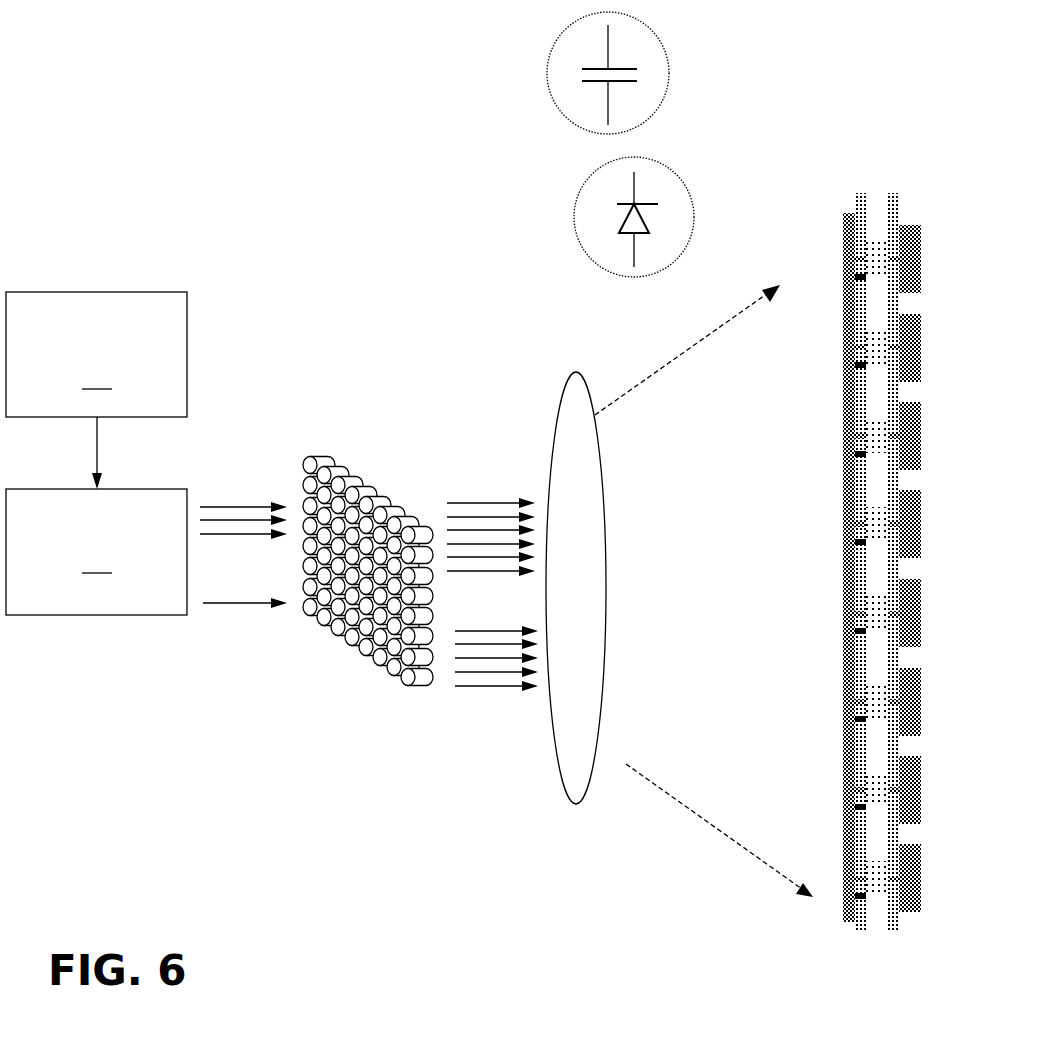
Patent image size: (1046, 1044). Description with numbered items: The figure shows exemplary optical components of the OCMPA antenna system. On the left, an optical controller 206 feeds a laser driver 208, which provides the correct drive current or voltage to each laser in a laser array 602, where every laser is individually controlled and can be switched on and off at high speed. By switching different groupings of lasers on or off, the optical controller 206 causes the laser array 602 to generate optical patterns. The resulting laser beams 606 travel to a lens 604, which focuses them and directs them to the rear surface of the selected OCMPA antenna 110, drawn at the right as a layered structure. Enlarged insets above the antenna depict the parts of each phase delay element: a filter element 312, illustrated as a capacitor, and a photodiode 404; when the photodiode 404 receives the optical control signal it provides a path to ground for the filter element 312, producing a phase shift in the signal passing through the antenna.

The optical controller 206 is at (96, 354).
The laser driver 208 is at (96, 552).
The laser array 602 is at (432, 697).
The laser beams 606 is at (537, 700).
The lens 604 is at (577, 783).
The filter element 312 is at (870, 250).
The photodiode 404 is at (853, 277).
The OCMPA antenna 110 is at (843, 928).